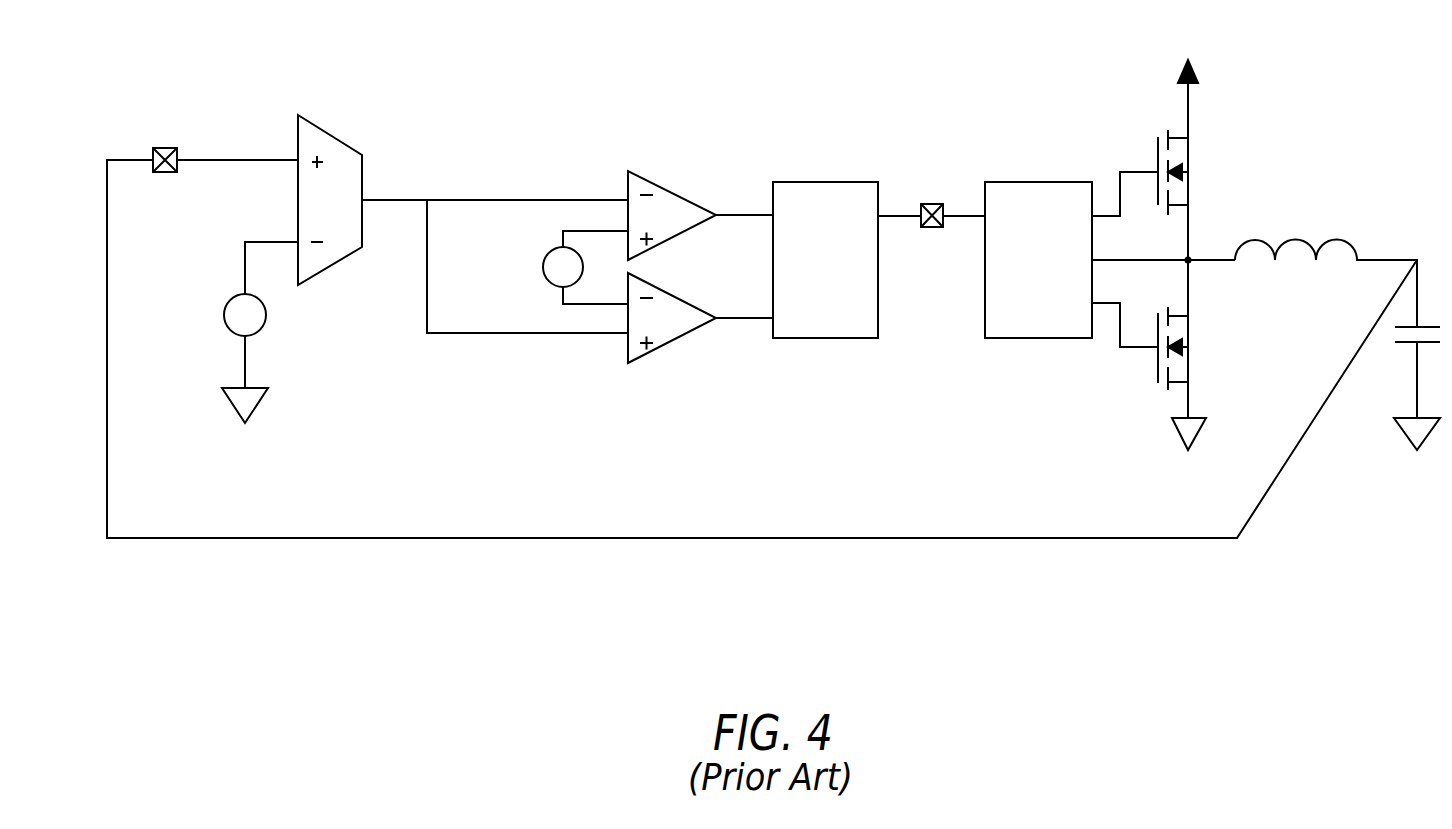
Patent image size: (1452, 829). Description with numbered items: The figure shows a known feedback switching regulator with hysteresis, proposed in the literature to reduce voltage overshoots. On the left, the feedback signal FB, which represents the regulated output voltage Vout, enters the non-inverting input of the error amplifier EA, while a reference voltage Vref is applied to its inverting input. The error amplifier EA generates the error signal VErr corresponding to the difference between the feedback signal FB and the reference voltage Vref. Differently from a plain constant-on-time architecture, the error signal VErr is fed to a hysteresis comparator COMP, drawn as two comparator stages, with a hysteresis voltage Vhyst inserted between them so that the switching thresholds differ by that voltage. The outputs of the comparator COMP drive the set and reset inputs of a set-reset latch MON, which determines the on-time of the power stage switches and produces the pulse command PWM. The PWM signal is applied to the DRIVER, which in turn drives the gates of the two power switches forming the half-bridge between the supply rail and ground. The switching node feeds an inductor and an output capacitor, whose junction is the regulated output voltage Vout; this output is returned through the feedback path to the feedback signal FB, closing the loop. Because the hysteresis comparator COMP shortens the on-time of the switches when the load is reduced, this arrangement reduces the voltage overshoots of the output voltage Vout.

The feedback signal FB is at (165, 144).
The error amplifier EA is at (330, 200).
The reference voltage Vref is at (271, 332).
The error signal VErr is at (495, 246).
The hysteresis voltage Vhyst is at (549, 267).
The hysteresis comparator COMP is at (672, 267).
The set-reset latch MON is at (824, 226).
The PWM signal PWM is at (931, 199).
The driver DRIVER is at (1038, 260).
The regulated output voltage Vout is at (1337, 338).